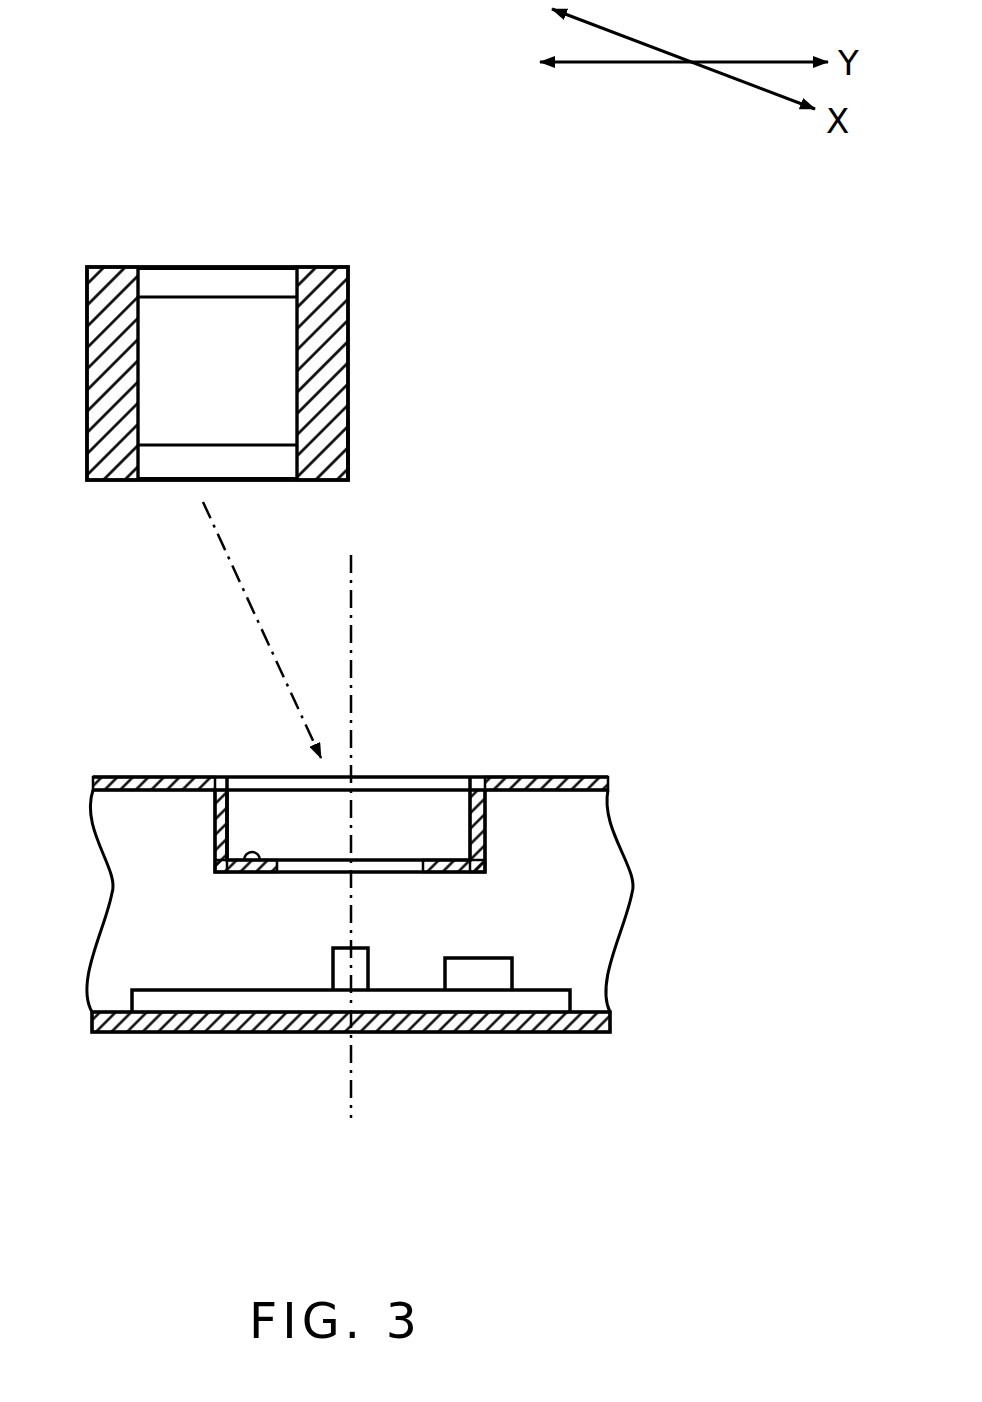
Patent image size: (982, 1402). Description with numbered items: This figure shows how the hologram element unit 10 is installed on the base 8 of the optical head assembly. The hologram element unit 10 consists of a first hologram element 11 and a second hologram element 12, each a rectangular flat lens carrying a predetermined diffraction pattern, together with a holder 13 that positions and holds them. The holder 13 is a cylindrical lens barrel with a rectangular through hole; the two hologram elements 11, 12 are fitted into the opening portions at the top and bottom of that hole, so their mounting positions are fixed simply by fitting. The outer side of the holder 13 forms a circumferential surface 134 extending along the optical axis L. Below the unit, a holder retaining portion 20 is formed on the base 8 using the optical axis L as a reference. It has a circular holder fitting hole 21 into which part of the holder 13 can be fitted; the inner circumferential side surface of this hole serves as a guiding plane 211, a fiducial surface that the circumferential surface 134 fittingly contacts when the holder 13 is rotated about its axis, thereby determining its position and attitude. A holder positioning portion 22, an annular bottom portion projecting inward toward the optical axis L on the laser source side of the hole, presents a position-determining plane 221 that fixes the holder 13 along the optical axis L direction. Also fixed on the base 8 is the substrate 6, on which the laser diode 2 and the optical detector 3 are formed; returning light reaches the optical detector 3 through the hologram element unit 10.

The hologram element unit 10 is at (420, 220).
The second hologram element 12 is at (167, 273).
The holder 13 is at (333, 365).
The circumferential surface 134 is at (347, 447).
The first hologram element 11 is at (162, 470).
The holder retaining portion 20 is at (455, 696).
The holder fitting hole 21 is at (448, 797).
The guiding plane 211 is at (248, 800).
The holder positioning portion 22 is at (487, 860).
The position-determining plane 221 is at (262, 862).
The base 8 is at (140, 1045).
The substrate 6 is at (252, 1002).
The laser diode 2 is at (360, 978).
The optical detector 3 is at (485, 977).
The optical axis L is at (352, 1093).